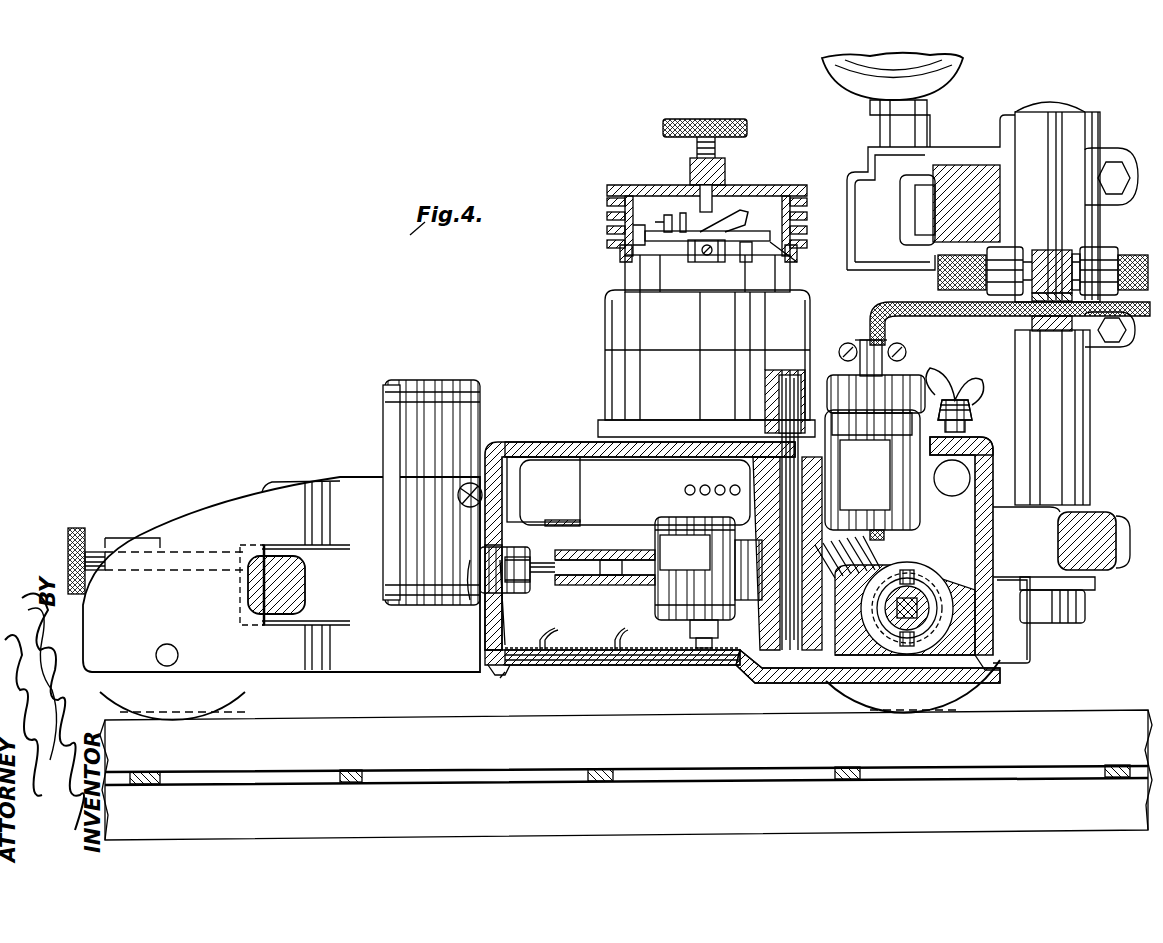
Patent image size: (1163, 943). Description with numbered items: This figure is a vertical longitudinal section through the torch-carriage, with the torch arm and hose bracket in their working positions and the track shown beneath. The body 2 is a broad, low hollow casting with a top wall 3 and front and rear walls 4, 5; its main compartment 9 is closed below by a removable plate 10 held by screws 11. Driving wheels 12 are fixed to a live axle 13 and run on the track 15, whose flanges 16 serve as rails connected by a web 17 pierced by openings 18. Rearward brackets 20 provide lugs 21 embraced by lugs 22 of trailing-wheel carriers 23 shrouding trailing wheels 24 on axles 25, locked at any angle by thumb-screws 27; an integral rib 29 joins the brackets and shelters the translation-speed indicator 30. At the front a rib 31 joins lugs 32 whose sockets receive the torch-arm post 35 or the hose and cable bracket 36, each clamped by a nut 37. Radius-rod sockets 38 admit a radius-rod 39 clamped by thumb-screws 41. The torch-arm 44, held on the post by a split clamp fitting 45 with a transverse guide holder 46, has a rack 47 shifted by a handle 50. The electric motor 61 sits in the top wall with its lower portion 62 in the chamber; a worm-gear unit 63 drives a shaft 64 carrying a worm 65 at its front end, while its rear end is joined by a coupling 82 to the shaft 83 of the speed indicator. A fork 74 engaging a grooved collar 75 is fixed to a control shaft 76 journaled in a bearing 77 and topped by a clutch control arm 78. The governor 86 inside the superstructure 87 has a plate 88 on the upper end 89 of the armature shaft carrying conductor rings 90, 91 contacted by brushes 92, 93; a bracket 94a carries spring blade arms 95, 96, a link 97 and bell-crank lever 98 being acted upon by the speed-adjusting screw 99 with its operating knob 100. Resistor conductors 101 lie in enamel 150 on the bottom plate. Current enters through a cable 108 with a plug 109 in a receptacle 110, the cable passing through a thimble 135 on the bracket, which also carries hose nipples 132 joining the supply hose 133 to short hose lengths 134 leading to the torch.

The body 2 is at (516, 440).
The top wall 3 is at (545, 440).
The front wall 4 is at (993, 542).
The rear wall 5 is at (470, 632).
The main compartment 9 is at (555, 498).
The removable plate 10 is at (722, 668).
The screws 11 is at (510, 676).
The driving wheels 12 is at (855, 705).
The live axle 13 is at (925, 600).
The track 15 is at (1078, 715).
The flanges 16 is at (626, 775).
The web 17 is at (612, 770).
The openings 18 is at (798, 776).
The brackets 20 is at (356, 490).
The lugs 21 is at (278, 548).
The lugs 22 is at (310, 490).
The trailing-wheel carriers 23 is at (192, 530).
The trailing wheels 24 is at (232, 690).
The axle 25 is at (172, 650).
The thumb-screws 27 is at (80, 528).
The rib 29 is at (255, 588).
The translation-speed indicator 30 is at (440, 382).
The rib 31 is at (1095, 568).
The lugs 32 is at (1013, 570).
The torch-arm post 35 is at (1088, 410).
The hose and cable bracket 36 is at (1046, 248).
The nut 37 is at (1074, 624).
The radius-rod sockets 38 is at (980, 452).
The radius-rod 39 is at (965, 483).
The thumb-screws 41 is at (978, 400).
The torch-arm 44 is at (985, 192).
The split clamp fitting 45 is at (1082, 150).
The transverse guide holder 46 is at (960, 150).
The rack 47 is at (918, 210).
The handle 50 is at (838, 78).
The electric motor 61 is at (706, 346).
The lower portion 62 is at (635, 492).
The worm-gear unit 63 is at (695, 582).
The shaft 64 is at (642, 590).
The worm 65 is at (880, 546).
The fork 74 is at (880, 660).
The grooved collar 75 is at (925, 630).
The control shaft 76 is at (762, 466).
The bearing 77 is at (815, 488).
The clutch control arm 78 is at (805, 395).
The coupling 82 is at (600, 586).
The shaft 83 is at (547, 580).
The governor 86 is at (606, 216).
The superstructure 87 is at (627, 186).
The plate 88 is at (765, 232).
The upper end 89 is at (700, 264).
The conductor ring 90 is at (798, 249).
The conductor ring 91 is at (785, 262).
The brush 92 is at (622, 250).
The brush 93 is at (745, 262).
The bracket 94a is at (645, 228).
The spring blade arm 95 is at (683, 212).
The spring blade arm 96 is at (666, 214).
The link 97 is at (745, 212).
The bell-crank lever 98 is at (790, 198).
The speed-adjusting screw 99 is at (726, 178).
The operating knob 100 is at (742, 120).
The conductors 101 is at (628, 665).
The cable 108 is at (980, 318).
The plug 109 is at (926, 382).
The receptacle 110 is at (920, 512).
The hose nipples 132 is at (1078, 258).
The supply hose 133 is at (1125, 256).
The short hose lengths 134 is at (936, 278).
The thimble 135 is at (1048, 331).
The enamel 150 is at (590, 650).